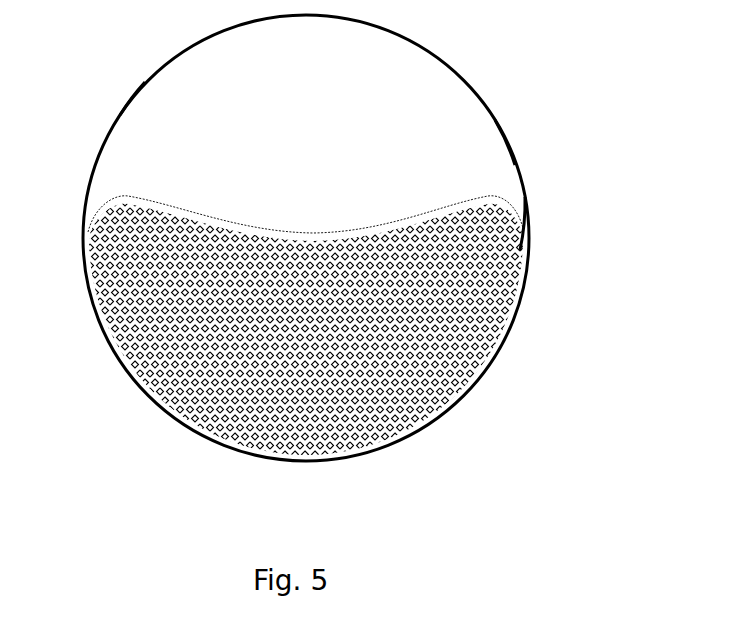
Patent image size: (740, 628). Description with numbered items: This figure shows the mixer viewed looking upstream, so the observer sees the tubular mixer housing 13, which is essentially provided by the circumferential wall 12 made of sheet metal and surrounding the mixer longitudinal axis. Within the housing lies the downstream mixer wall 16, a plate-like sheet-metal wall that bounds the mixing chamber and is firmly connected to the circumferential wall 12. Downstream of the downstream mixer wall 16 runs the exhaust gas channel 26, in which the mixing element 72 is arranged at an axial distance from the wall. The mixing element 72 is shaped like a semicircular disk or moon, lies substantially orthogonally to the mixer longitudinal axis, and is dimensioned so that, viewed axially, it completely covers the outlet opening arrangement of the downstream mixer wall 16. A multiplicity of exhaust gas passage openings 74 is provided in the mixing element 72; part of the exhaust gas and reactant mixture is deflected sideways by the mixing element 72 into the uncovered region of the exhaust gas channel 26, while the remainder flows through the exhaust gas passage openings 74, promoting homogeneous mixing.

The circumferential wall 12 is at (523, 197).
The tubular mixer housing 13 is at (496, 128).
The downstream mixer wall 16 is at (161, 112).
The exhaust gas channel 26 is at (415, 80).
The mixing element 72 is at (128, 353).
The exhaust gas passage openings 74 is at (462, 366).